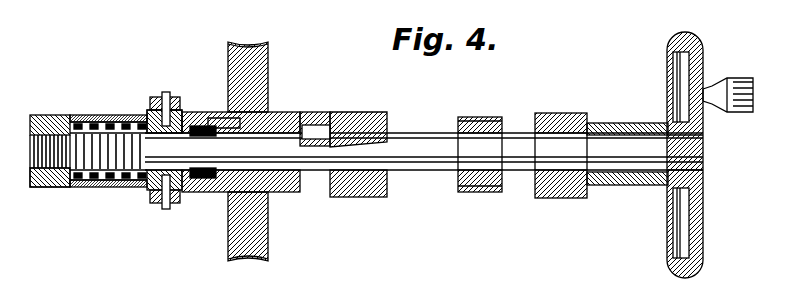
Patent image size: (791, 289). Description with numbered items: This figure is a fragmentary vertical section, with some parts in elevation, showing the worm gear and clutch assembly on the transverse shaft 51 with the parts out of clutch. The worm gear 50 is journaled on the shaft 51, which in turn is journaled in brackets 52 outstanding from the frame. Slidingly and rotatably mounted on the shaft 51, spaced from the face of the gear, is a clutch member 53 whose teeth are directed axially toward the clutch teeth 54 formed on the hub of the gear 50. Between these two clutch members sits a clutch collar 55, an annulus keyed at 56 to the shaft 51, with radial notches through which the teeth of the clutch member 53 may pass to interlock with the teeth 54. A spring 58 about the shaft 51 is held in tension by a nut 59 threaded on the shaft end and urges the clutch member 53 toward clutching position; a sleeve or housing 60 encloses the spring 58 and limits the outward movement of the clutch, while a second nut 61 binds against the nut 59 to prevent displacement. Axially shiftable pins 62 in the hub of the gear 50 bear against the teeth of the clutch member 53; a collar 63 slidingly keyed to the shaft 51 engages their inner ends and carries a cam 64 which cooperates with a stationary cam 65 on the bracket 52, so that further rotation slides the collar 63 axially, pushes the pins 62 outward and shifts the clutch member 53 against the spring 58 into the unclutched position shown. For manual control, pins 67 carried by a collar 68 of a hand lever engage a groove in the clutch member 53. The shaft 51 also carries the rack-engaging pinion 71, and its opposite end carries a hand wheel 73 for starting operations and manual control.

The worm gear 50 is at (268, 46).
The transverse shaft 51 is at (420, 126).
The brackets 52 is at (388, 188).
The clutch member 53 is at (148, 113).
The clutch teeth 54 is at (218, 118).
The clutch collar 55 is at (204, 180).
The key 56 is at (200, 126).
The spring 58 is at (102, 187).
The nut 59 is at (62, 187).
The sleeve or housing 60 is at (95, 115).
The second nut 61 is at (40, 115).
The axially shiftable pins 62 is at (272, 110).
The collar 63 is at (308, 109).
The cam 64 is at (318, 125).
The stationary cam 65 is at (350, 113).
The pins 67 is at (166, 92).
The collar 68 is at (150, 110).
The rack-engaging pinion 71 is at (480, 118).
The hand wheel 73 is at (668, 224).